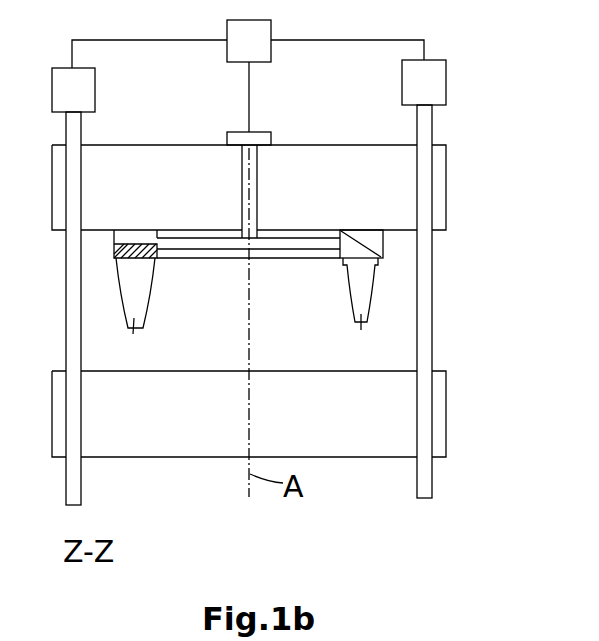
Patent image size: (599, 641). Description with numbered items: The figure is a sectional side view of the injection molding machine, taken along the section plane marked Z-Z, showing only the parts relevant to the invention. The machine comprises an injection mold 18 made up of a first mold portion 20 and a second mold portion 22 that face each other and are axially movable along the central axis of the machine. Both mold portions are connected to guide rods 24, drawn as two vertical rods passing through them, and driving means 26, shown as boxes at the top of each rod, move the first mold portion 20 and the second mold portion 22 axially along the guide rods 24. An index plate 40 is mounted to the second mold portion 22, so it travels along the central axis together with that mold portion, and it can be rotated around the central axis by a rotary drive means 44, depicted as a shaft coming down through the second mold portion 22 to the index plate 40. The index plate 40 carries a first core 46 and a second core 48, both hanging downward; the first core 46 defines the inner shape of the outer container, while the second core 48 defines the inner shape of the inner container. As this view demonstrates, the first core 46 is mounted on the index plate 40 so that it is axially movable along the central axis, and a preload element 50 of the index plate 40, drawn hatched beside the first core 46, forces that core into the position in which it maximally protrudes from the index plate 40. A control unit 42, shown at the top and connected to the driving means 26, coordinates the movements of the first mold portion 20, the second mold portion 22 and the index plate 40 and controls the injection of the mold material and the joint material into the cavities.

The injection mold 18 is at (249, 301).
The first mold portion 20 is at (378, 427).
The second mold portion 22 is at (378, 200).
The guide rods 24 is at (82, 132).
The driving means 26 is at (97, 89).
The index plate 40 is at (303, 258).
The control unit 42 is at (272, 26).
The rotary drive means 44 is at (262, 130).
The first core 46 is at (133, 314).
The second core 48 is at (360, 315).
The preload element 50 is at (137, 231).